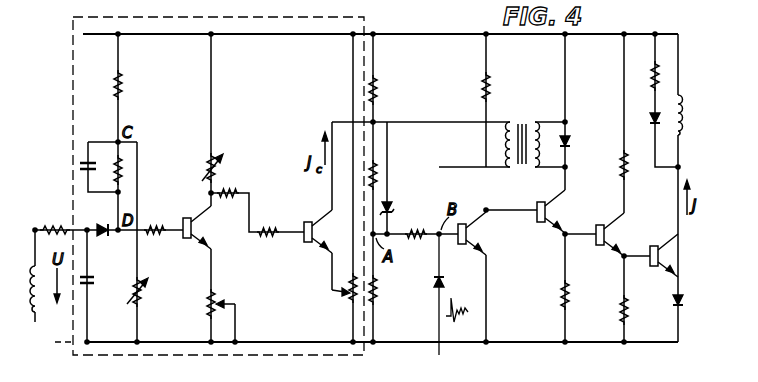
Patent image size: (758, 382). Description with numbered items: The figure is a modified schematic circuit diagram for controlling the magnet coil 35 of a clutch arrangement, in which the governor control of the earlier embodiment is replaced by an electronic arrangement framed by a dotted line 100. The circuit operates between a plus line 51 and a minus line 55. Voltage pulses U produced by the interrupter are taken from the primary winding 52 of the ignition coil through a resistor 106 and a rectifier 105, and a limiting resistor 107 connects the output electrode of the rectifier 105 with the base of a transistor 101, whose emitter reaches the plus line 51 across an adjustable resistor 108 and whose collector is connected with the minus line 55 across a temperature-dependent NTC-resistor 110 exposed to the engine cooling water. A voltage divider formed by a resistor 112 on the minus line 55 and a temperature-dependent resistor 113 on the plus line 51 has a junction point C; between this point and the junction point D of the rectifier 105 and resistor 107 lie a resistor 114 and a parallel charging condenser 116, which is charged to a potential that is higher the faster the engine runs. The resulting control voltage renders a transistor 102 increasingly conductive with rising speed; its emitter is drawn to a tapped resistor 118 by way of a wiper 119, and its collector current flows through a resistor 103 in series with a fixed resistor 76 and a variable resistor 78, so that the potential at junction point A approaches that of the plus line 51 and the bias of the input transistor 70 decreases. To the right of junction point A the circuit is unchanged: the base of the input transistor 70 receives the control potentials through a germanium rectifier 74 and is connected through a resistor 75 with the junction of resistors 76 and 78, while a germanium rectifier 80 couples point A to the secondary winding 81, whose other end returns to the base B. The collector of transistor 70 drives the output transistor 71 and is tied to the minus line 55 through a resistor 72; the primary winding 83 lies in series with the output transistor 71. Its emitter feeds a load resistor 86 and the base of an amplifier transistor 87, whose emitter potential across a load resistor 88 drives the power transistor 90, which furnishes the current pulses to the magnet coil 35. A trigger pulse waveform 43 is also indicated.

The dotted line 100 is at (263, 20).
The minus line 55 is at (441, 37).
The plus line 51 is at (404, 344).
The primary winding of the ignition coil 52 is at (37, 312).
The resistor 106 is at (56, 222).
The rectifier 105 is at (104, 238).
The limiting resistor 107 is at (156, 225).
The resistor 112 is at (124, 85).
The resistor 114 is at (124, 172).
The charging condenser 116 is at (84, 160).
The resistor 113 is at (142, 300).
The NTC-resistor 110 is at (217, 174).
The transistor 101 is at (198, 233).
The adjustable resistor 108 is at (208, 294).
The transistor 102 is at (313, 222).
The potentiometer 118 is at (350, 300).
The potentiometer wiper 119 is at (340, 291).
The resistor 103 is at (378, 92).
The fixed resistor 76 is at (379, 174).
The variable resistor 78 is at (380, 292).
The germanium rectifier 80 is at (393, 208).
The resistor 75 is at (418, 229).
The germanium rectifier 74 is at (449, 280).
The trigger pulse 43 is at (463, 317).
The resistor 72 is at (490, 84).
The input transistor 70 is at (471, 239).
The secondary winding 81 is at (509, 126).
The primary winding 83 is at (537, 126).
The output transistor 71 is at (554, 206).
The load resistor 86 is at (560, 296).
The amplifier transistor 87 is at (609, 232).
The load resistor 88 is at (619, 312).
The magnet coil 35 is at (676, 130).
The power transistor 90 is at (664, 255).